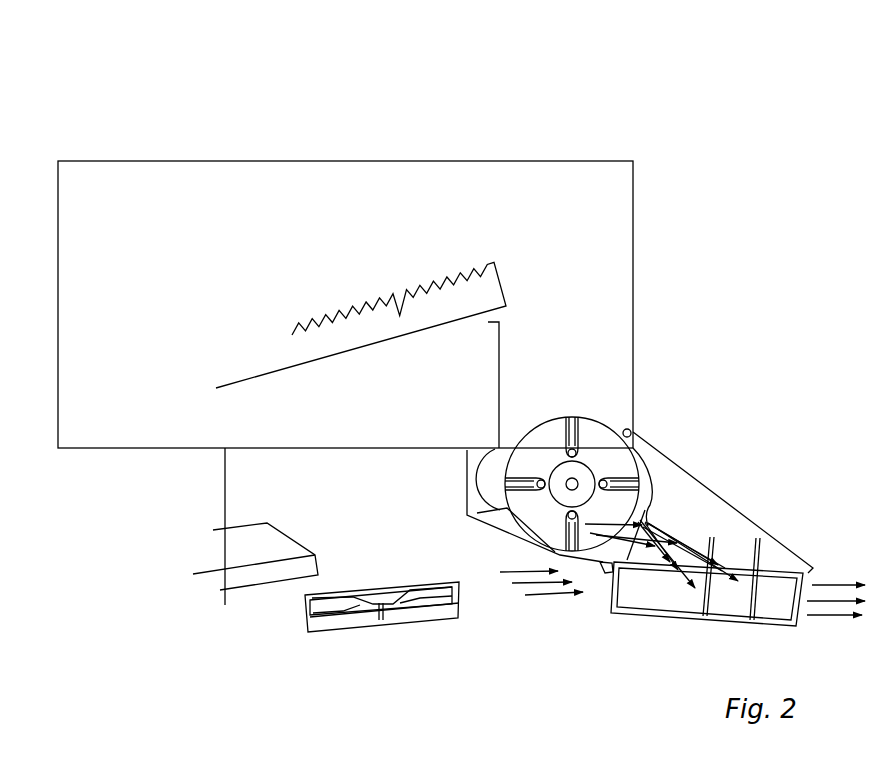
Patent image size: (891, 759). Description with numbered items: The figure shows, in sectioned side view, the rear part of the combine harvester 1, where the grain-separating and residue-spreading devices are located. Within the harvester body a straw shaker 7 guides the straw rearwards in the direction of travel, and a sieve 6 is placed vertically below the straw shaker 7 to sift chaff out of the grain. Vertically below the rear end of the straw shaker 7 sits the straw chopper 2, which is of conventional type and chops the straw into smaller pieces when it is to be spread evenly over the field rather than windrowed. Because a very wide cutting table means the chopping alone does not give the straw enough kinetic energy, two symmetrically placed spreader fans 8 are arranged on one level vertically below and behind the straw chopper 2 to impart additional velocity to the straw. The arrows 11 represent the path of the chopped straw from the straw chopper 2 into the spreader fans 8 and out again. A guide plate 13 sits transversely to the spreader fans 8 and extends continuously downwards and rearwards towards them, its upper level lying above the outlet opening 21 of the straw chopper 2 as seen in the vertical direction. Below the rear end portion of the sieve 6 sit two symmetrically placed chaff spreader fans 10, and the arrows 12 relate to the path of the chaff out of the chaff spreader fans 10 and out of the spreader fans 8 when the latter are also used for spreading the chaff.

The combine harvester 1 is at (241, 116).
The straw chopper 2 is at (633, 425).
The sieve 6 is at (280, 530).
The straw shaker 7 is at (400, 300).
The spreader fans 8 is at (777, 565).
The chaff spreader fans 10 is at (406, 606).
The arrows 11 is at (655, 527).
The arrows 12 is at (538, 598).
The guide plate 13 is at (705, 538).
The outlet opening 21 is at (636, 545).